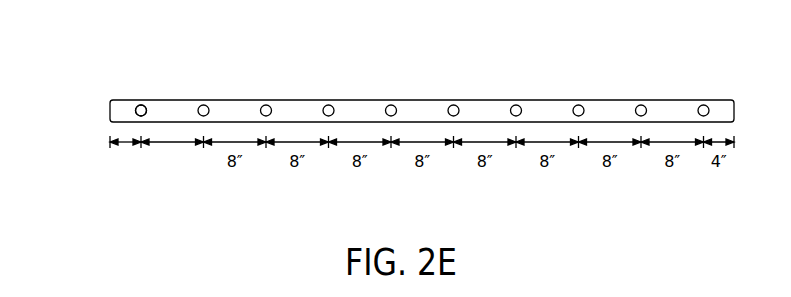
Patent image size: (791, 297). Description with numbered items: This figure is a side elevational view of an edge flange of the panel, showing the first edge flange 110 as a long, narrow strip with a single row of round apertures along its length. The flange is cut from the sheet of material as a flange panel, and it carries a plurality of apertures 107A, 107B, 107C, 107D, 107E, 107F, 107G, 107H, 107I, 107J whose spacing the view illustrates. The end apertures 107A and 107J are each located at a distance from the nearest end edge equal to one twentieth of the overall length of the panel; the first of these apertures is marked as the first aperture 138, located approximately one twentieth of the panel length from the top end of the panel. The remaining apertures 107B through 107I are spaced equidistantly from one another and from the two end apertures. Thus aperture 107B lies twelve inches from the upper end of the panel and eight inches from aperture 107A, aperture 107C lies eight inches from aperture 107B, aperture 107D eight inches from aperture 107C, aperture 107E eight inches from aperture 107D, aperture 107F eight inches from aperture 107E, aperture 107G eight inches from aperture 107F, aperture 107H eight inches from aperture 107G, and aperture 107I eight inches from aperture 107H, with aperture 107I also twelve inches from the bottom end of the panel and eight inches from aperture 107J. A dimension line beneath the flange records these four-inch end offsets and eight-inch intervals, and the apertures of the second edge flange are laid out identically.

The first edge flange 110 is at (108, 111).
The first aperture 138 is at (136, 106).
The aperture 107A is at (142, 105).
The aperture 107B is at (204, 105).
The aperture 107C is at (267, 105).
The aperture 107D is at (330, 105).
The aperture 107E is at (392, 105).
The aperture 107F is at (454, 105).
The aperture 107G is at (517, 105).
The aperture 107H is at (580, 105).
The aperture 107I is at (642, 105).
The aperture 107J is at (704, 105).